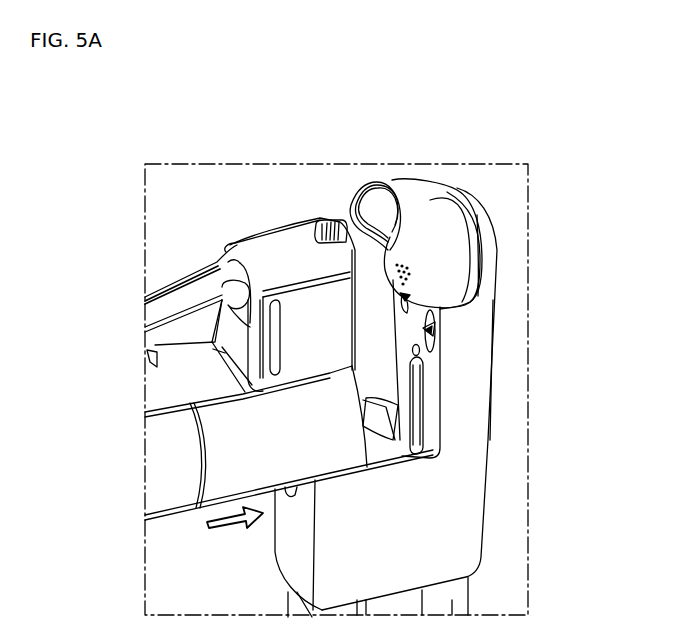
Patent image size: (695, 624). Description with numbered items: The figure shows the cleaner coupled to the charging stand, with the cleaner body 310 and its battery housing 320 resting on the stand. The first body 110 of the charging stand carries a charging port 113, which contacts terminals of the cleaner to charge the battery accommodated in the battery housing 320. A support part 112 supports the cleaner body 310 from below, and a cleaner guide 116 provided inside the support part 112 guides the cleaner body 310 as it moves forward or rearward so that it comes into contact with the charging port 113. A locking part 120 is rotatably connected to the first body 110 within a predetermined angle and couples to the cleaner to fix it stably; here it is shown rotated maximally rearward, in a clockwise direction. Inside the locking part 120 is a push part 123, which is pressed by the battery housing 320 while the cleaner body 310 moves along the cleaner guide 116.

The first body 110 is at (467, 509).
The support part 112 is at (400, 377).
The charging port 113 is at (425, 323).
The cleaner guide 116 is at (400, 423).
The locking part 120 is at (432, 202).
The push part 123 is at (390, 233).
The cleaner body 310 is at (215, 452).
The battery housing 320 is at (296, 313).